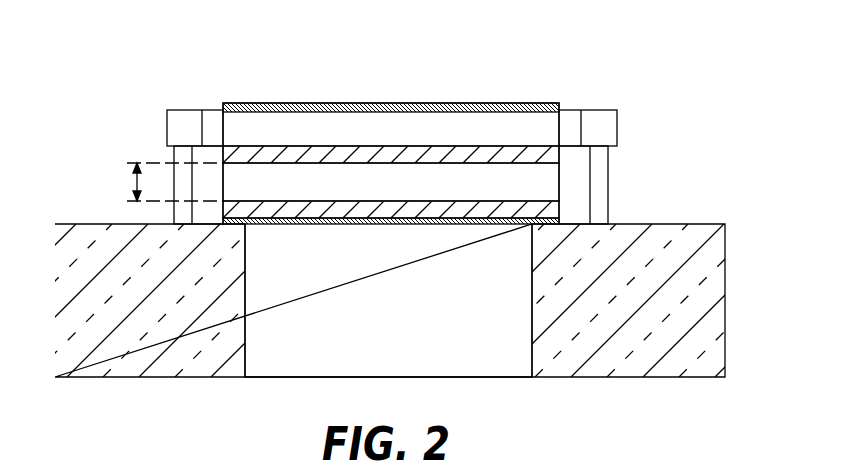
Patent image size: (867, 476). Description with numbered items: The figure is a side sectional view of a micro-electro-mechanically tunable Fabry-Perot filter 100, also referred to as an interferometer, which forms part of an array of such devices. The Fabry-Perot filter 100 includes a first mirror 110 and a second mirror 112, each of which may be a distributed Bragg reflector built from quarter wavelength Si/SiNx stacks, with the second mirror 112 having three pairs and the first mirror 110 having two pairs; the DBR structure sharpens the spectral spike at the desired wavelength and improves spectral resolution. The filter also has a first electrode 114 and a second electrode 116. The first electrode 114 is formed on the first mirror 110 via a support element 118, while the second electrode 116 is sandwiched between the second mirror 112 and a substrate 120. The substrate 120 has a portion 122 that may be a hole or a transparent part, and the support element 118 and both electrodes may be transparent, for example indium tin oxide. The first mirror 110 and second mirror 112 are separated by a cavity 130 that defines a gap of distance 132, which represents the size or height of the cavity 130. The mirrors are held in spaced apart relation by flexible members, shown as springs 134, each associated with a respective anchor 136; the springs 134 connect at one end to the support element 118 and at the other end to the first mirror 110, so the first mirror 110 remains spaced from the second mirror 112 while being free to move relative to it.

The Fabry-Perot filter 100 is at (260, 61).
The first mirror 110 is at (548, 153).
The second mirror 112 is at (548, 210).
The first electrode 114 is at (391, 99).
The second electrode 116 is at (468, 226).
The support element 118 is at (327, 113).
The substrate 120 is at (716, 288).
The portion 122 is at (410, 311).
The cavity 130 is at (372, 191).
The distance 132 is at (133, 178).
The springs 134 is at (167, 128).
The anchor 136 is at (175, 155).